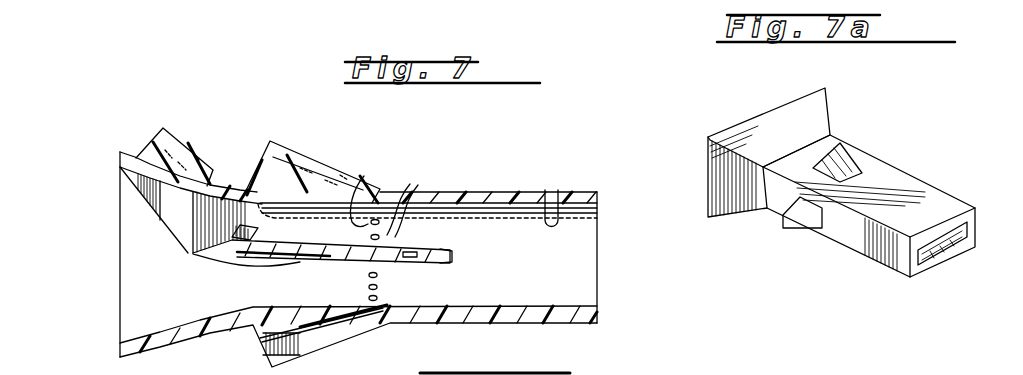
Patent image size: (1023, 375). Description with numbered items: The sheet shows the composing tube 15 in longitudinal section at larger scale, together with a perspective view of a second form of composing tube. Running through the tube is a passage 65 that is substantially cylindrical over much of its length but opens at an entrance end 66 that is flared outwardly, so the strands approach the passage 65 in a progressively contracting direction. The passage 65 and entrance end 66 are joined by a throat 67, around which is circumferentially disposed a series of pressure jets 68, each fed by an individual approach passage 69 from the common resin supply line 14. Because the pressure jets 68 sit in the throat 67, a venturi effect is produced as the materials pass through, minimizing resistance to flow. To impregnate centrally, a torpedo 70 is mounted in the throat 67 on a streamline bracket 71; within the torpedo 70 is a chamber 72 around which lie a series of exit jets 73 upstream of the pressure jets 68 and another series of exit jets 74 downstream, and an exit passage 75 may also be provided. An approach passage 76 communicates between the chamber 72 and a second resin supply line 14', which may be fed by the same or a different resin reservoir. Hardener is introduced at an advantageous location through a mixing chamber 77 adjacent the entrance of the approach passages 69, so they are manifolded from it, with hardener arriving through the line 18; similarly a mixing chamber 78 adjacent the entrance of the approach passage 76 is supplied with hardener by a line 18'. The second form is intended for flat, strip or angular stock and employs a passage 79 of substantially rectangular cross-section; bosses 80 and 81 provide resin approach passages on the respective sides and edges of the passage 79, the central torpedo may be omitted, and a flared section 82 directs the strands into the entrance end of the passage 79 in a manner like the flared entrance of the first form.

In FIG. 7, the resin supply line 14 is at (247, 123).
In FIG. 7, the resin supply line 14' is at (137, 95).
In FIG. 7, the composing tube 15 is at (530, 168).
In FIG. 7, the line 18 is at (332, 148).
In FIG. 7, the line 18' is at (208, 96).
In FIG. 7, the passage 65 is at (552, 205).
In FIG. 7, the entrance end 66 is at (127, 278).
In FIG. 7, the throat 67 is at (366, 187).
In FIG. 7, the pressure jets 68 is at (412, 200).
In FIG. 7, the approach passage 69 is at (330, 162).
In FIG. 7, the torpedo 70 is at (222, 258).
In FIG. 7, the streamline bracket 71 is at (160, 219).
In FIG. 7, the chamber 72 is at (276, 257).
In FIG. 7, the exit jets 73 is at (340, 256).
In FIG. 7, the exit jets 74 is at (408, 258).
In FIG. 7, the exit passage 75 is at (452, 253).
In FIG. 7, the approach passage 76 is at (292, 172).
In FIG. 7, the mixing chamber 77 is at (262, 147).
In FIG. 7, the mixing chamber 78 is at (158, 122).
In FIG. 7a, the mixing chamber 78 is at (953, 173).
In FIG. 7a, the passage 79 is at (947, 245).
In FIG. 7a, the boss 80 is at (847, 162).
In FIG. 7a, the boss 81 is at (800, 223).
In FIG. 7a, the flared section 82 is at (758, 125).